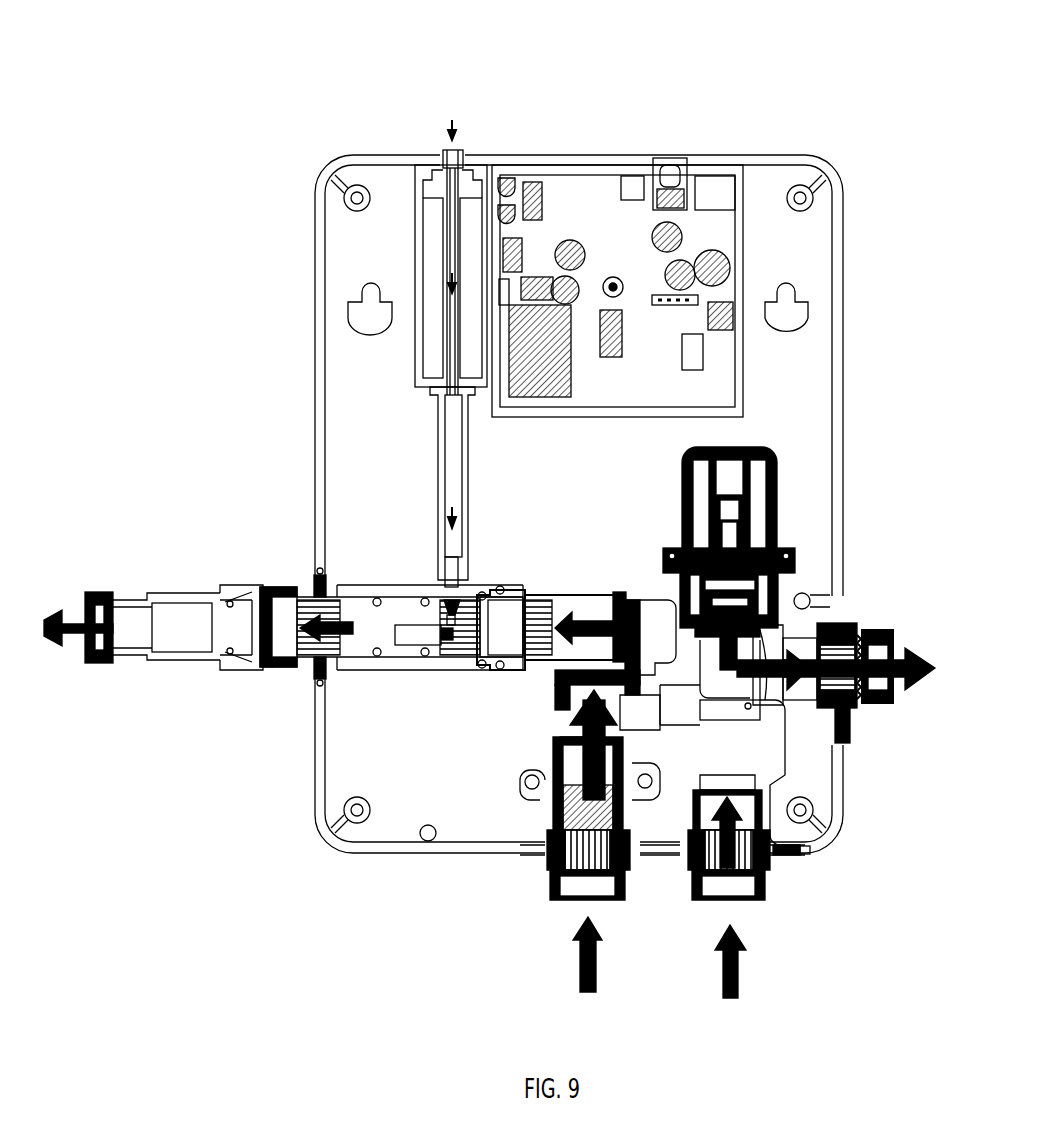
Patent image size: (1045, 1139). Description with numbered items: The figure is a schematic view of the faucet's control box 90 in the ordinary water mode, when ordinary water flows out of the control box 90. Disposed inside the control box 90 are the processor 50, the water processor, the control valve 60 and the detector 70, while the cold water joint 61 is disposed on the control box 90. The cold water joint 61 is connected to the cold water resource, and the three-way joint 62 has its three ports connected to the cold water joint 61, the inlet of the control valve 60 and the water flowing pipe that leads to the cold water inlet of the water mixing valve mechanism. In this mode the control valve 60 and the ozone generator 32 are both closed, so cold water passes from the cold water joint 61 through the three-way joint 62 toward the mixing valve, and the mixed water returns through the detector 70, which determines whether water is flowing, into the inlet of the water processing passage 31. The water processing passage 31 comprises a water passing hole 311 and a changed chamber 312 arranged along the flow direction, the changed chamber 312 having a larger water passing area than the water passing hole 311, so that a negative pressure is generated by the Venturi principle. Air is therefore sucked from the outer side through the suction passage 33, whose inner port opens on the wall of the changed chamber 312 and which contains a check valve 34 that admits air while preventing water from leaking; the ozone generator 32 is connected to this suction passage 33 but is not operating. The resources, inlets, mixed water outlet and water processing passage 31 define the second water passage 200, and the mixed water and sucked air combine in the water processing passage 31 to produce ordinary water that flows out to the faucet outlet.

The control box 90 is at (345, 157).
The processor 50 is at (555, 205).
The ozone generator 32 is at (435, 260).
The suction passage 33 is at (450, 475).
The water processing passage 31 is at (440, 665).
The water passing hole 311 is at (455, 655).
The changed chamber 312 is at (312, 580).
The check valve 34 is at (445, 607).
The second water passage 200 is at (582, 602).
The control valve 60 is at (705, 540).
The cold water joint 61 is at (762, 882).
The three-way joint 62 is at (752, 735).
The detector 70 is at (582, 780).